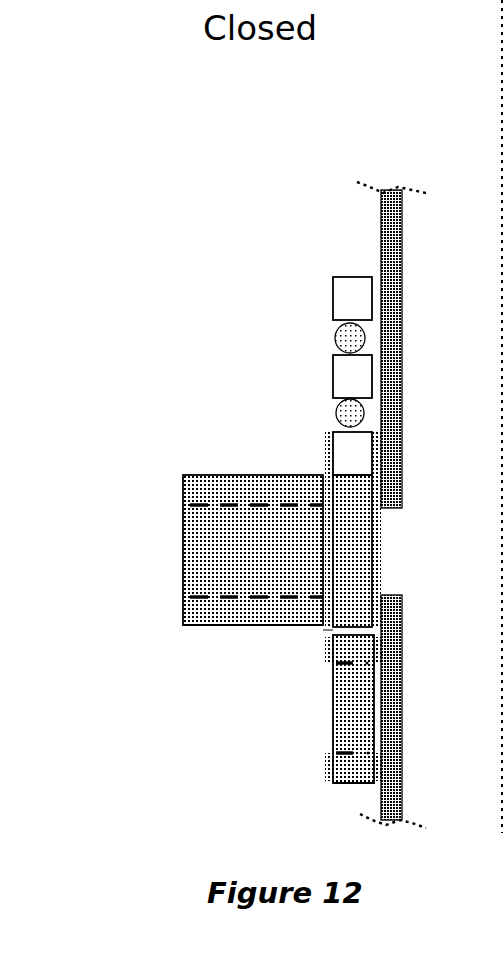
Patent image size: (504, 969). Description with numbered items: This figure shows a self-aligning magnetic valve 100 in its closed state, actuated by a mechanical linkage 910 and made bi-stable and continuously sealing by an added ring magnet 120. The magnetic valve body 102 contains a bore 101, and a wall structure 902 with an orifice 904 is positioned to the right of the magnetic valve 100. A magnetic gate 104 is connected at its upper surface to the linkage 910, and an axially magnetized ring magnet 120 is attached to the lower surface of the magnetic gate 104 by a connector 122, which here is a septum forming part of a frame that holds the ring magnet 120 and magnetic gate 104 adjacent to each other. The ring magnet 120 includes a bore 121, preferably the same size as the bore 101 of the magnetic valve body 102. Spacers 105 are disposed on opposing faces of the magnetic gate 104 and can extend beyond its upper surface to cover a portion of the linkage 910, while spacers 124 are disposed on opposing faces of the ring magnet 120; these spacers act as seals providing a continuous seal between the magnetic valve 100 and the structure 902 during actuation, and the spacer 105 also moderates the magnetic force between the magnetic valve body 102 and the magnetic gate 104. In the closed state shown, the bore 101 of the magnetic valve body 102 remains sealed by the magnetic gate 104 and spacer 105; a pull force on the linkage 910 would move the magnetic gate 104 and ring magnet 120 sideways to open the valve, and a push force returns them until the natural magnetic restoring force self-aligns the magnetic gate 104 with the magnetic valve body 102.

The magnetic valve 100 is at (292, 682).
The bore 101 is at (183, 522).
The magnetic valve body 102 is at (242, 627).
The magnetic gate 104 is at (360, 528).
The spacer 105 is at (325, 458).
The ring magnet 120 is at (330, 732).
The bore 121 is at (358, 707).
The connector 122 is at (325, 630).
The spacers 124 is at (368, 645).
The wall structure 902 is at (402, 362).
The orifice 904 is at (430, 540).
The mechanical linkage 910 is at (286, 292).